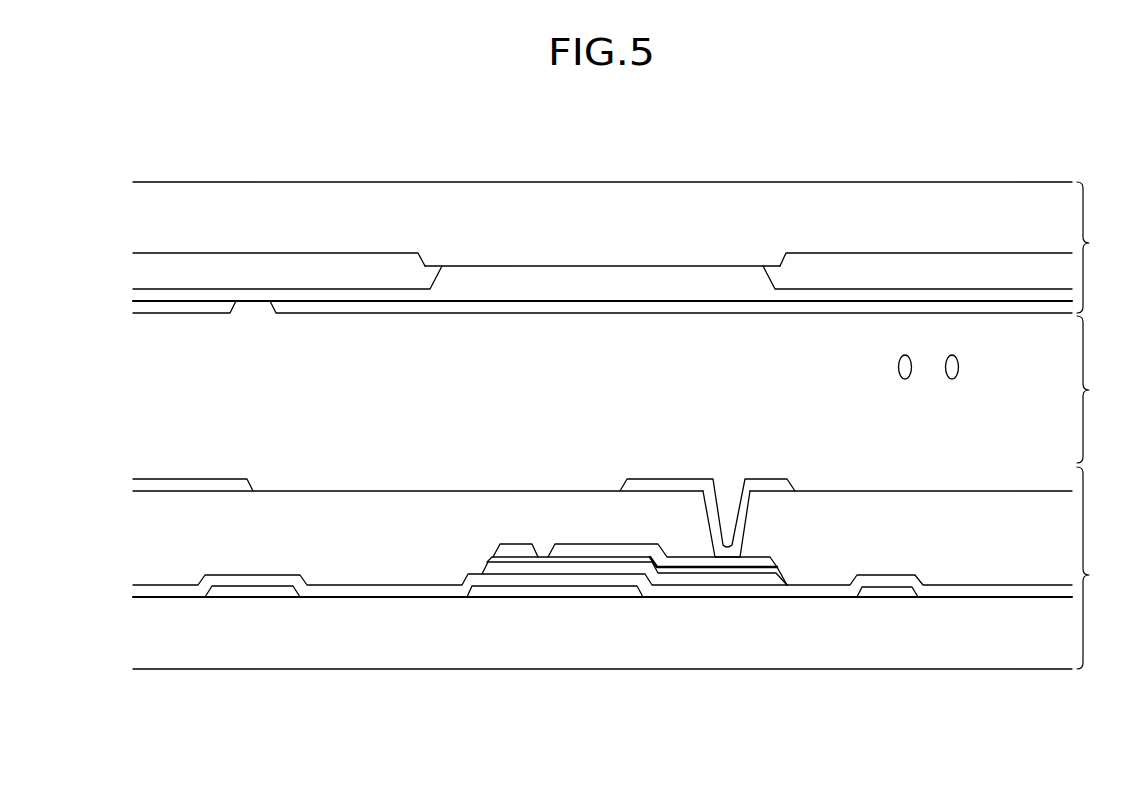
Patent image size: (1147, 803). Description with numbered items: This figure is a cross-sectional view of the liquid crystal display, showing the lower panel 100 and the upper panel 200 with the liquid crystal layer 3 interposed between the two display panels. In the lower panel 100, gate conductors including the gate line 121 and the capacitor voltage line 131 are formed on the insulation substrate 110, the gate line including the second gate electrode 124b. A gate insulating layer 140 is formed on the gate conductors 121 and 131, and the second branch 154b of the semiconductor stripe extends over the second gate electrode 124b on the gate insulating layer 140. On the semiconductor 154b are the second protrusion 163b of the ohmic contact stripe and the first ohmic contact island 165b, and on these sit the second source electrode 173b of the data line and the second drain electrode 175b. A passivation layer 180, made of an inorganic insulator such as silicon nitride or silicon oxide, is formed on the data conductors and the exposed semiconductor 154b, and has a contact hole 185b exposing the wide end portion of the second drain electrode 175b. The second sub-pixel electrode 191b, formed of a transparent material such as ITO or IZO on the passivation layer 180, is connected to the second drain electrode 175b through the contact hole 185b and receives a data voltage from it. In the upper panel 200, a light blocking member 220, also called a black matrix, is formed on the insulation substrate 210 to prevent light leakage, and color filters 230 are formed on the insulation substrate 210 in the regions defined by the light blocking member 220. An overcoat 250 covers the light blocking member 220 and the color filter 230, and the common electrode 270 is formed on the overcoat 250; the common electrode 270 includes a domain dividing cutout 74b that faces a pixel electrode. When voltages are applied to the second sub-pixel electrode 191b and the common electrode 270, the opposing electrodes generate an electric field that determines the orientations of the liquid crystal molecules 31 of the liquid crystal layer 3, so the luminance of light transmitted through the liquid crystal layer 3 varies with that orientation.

The insulation substrate 210 is at (945, 205).
The color filter 230 is at (264, 270).
The light blocking member 220 is at (568, 262).
The overcoat 250 is at (653, 280).
The common electrode 270 is at (490, 307).
The cutout 74b is at (236, 303).
The liquid crystal molecules 31 is at (959, 366).
The upper panel 200 is at (1102, 247).
The liquid crystal layer 3 is at (1092, 389).
The lower panel 100 is at (1103, 568).
The passivation layer 180 is at (953, 520).
The second contact hole 185b is at (709, 516).
The second sub-pixel electrode 191b is at (190, 485).
The gate insulating layer 140 is at (373, 592).
The insulation substrate 110 is at (980, 647).
The capacitor voltage line 131 is at (253, 592).
The second gate electrode 124b is at (548, 592).
The gate conductors 121 is at (887, 592).
The second branch 154b is at (592, 570).
The second protrusion 163b is at (505, 560).
The first ohmic contact island 165b is at (687, 570).
The second source electrode 173b is at (517, 545).
The second drain electrode 175b is at (585, 550).